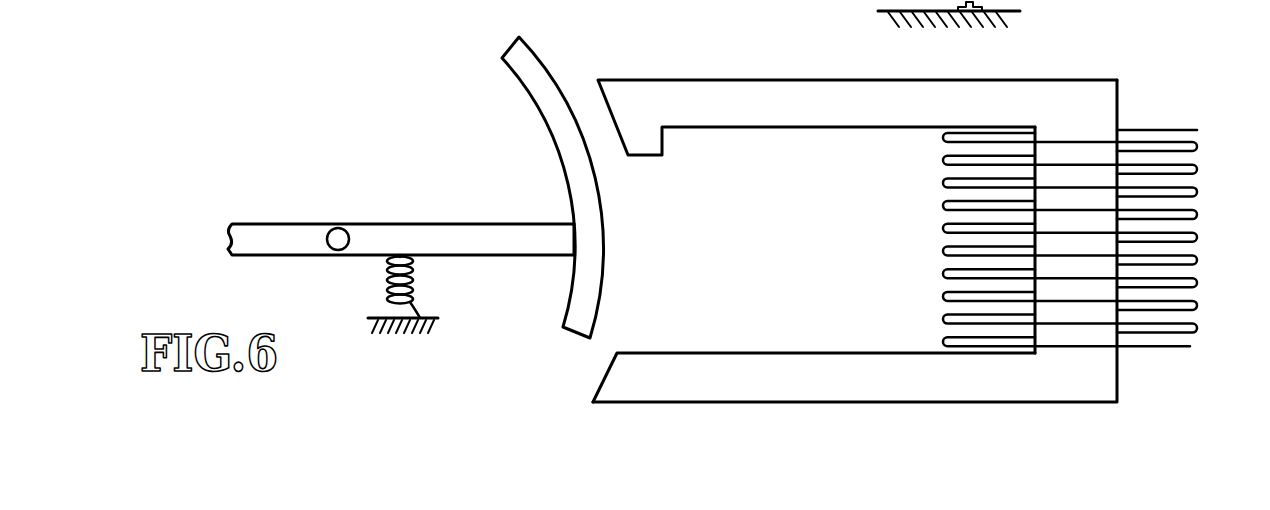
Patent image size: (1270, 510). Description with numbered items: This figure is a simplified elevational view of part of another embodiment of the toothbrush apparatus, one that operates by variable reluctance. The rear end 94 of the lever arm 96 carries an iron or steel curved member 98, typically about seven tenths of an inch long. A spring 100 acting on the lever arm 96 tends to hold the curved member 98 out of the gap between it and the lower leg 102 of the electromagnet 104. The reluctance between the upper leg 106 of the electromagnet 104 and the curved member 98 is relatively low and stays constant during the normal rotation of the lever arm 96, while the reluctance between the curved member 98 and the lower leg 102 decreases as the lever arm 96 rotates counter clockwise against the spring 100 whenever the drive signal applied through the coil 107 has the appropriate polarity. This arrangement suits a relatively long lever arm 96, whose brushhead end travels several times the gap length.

The rear end 94 is at (571, 258).
The lever arm 96 is at (470, 233).
The curved member 98 is at (604, 212).
The spring 100 is at (413, 298).
The lower leg 102 is at (725, 366).
The electromagnet 104 is at (1098, 74).
The upper leg 106 is at (825, 95).
The coil 107 is at (1170, 130).